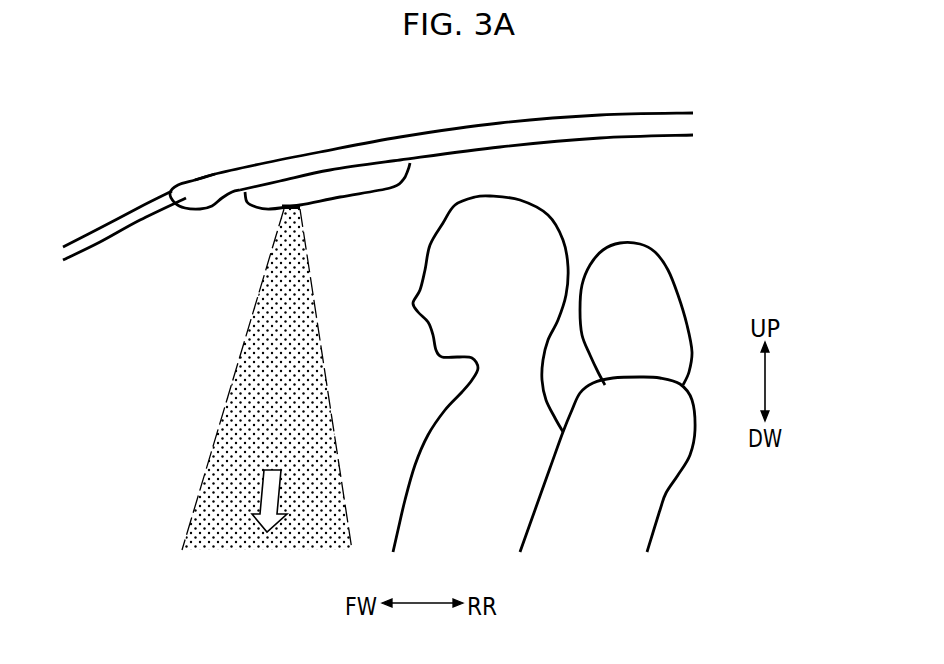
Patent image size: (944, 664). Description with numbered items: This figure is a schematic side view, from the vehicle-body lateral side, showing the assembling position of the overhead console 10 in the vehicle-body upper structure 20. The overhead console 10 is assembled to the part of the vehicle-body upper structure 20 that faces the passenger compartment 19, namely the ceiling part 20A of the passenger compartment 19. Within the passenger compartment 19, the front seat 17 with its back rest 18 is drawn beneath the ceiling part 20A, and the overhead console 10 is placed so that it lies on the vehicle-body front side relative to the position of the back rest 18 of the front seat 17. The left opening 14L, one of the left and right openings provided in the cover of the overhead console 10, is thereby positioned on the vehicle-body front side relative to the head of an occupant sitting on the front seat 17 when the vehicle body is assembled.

The vehicle-body upper structure 20 is at (322, 146).
The ceiling part 20A is at (555, 147).
The overhead console 10 is at (332, 193).
The left opening 14L is at (283, 211).
The passenger compartment 19 is at (390, 364).
The back rest 18 is at (547, 483).
The front seat 17 is at (663, 300).